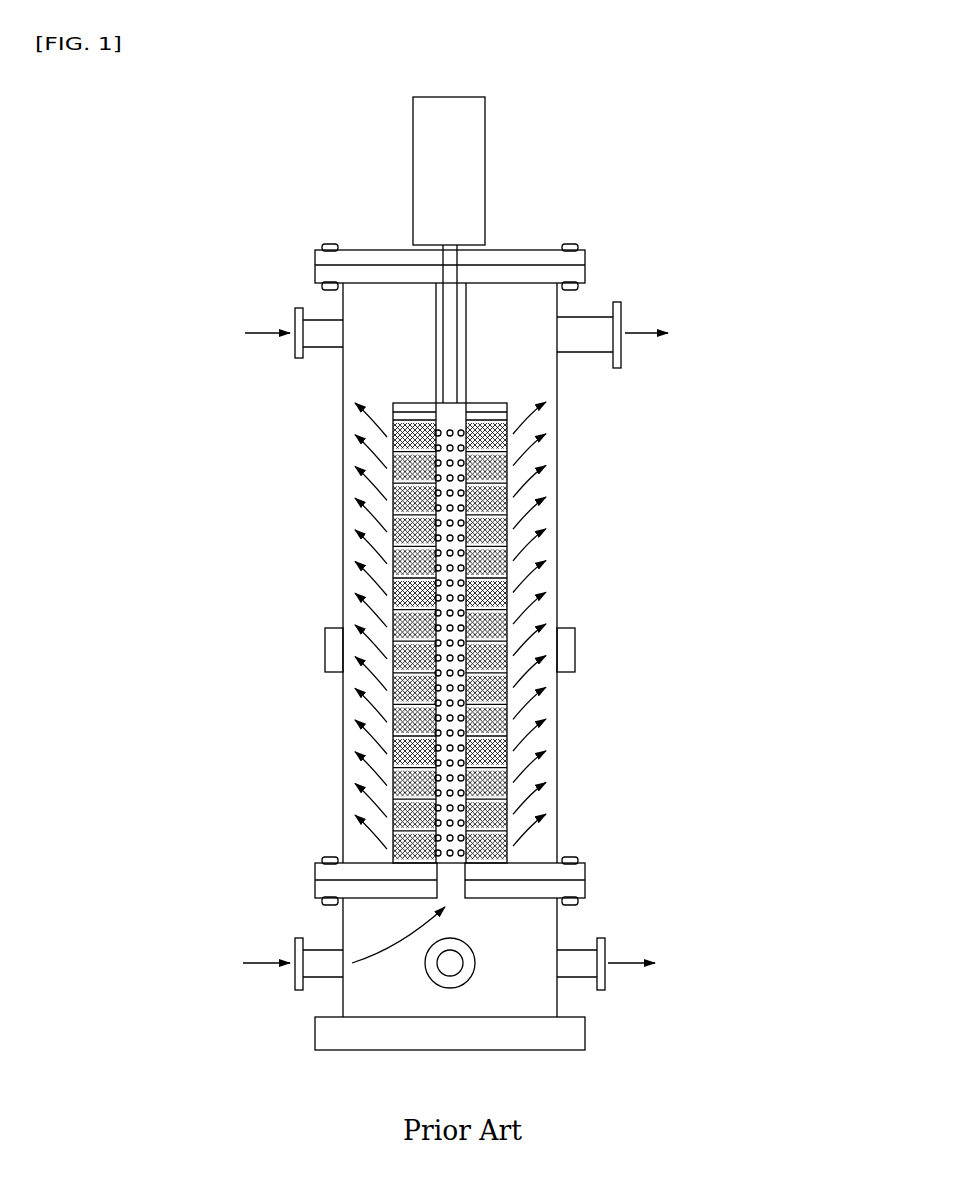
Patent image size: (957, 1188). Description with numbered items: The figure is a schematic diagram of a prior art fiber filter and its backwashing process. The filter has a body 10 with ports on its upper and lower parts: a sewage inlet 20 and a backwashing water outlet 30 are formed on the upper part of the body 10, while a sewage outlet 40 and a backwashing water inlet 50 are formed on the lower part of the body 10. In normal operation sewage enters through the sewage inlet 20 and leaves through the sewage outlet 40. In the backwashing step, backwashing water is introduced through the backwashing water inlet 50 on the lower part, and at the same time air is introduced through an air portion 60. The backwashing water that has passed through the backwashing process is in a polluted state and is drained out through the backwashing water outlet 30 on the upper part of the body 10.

The body 10 is at (577, 538).
The sewage inlet 20 is at (297, 308).
The backwashing water outlet 30 is at (617, 302).
The sewage outlet 40 is at (607, 978).
The backwashing water inlet 50 is at (298, 938).
The air portion 60 is at (465, 955).